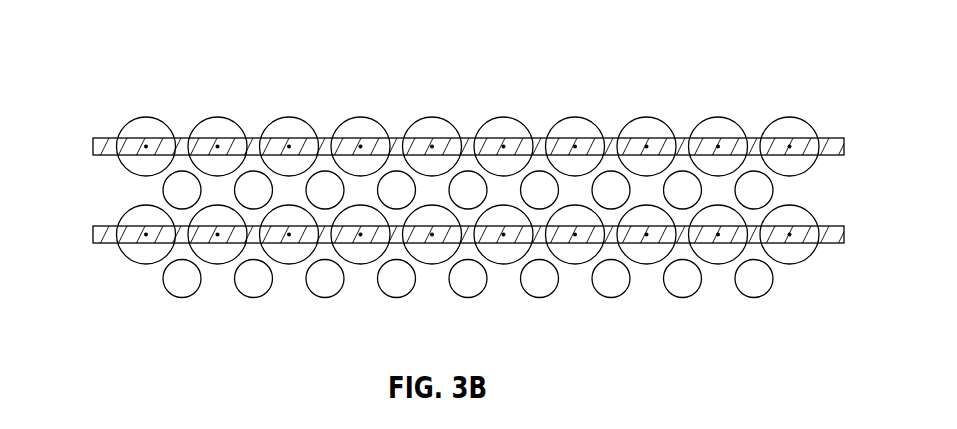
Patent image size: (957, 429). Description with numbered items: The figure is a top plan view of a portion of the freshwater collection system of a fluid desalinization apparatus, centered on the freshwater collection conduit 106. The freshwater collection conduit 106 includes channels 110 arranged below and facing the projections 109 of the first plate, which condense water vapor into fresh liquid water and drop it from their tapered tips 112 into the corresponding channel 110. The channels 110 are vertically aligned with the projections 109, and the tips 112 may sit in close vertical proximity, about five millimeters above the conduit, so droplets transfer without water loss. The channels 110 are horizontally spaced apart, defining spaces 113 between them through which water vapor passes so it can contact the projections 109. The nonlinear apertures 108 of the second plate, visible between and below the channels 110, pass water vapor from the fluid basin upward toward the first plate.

The freshwater collection conduit 106 is at (808, 57).
The nonlinear apertures 108 is at (187, 186).
The projections 109 is at (645, 117).
The channel 110 is at (845, 145).
The tips 112 is at (503, 140).
The spaces 113 is at (113, 183).